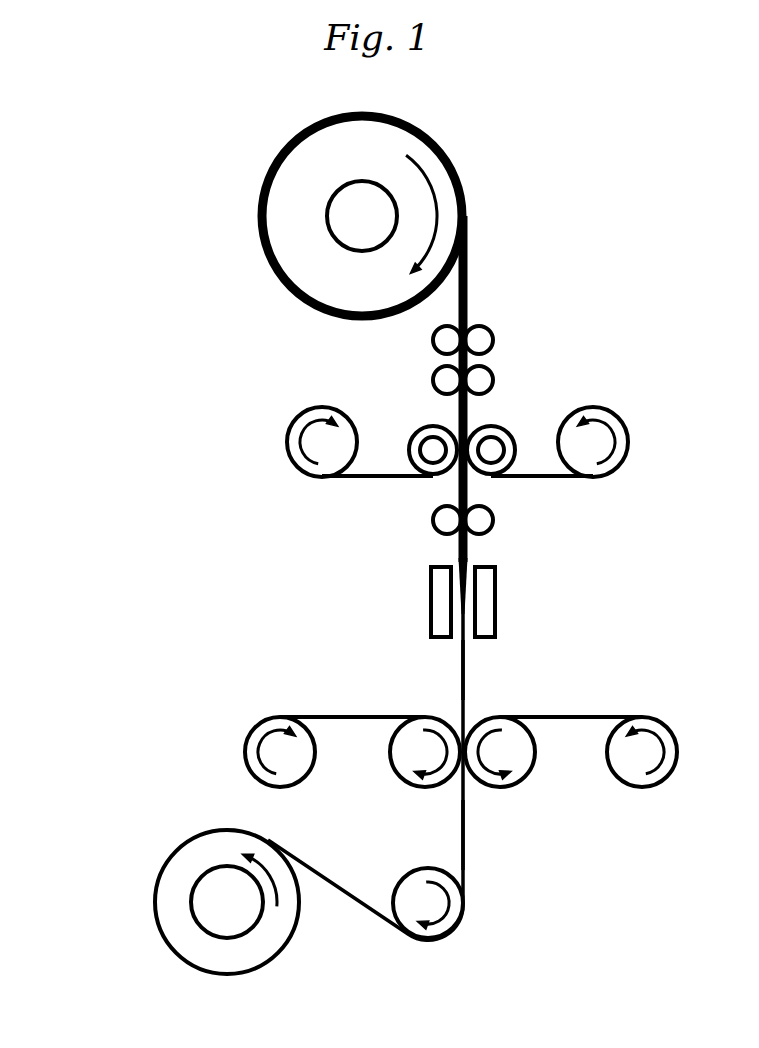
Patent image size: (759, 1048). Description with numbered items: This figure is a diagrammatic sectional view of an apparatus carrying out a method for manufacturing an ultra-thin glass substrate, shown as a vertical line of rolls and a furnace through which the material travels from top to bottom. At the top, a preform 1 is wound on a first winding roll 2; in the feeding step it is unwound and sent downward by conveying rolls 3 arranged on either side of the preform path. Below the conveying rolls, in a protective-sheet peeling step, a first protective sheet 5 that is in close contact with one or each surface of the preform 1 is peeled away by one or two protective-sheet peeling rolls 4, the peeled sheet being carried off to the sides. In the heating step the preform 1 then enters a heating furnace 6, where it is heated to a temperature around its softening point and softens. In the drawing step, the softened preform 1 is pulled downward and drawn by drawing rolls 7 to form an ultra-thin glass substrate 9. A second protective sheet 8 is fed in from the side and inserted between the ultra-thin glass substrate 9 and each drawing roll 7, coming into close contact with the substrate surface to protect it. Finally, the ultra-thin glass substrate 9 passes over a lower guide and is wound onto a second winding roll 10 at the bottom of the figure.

The preform 1 is at (468, 285).
The first winding roll 2 is at (323, 217).
The conveying rolls 3 is at (493, 380).
The protective-sheet peeling rolls 4 is at (510, 430).
The first protective sheet 5 is at (528, 478).
The heating furnace 6 is at (488, 576).
The drawing rolls 7 is at (500, 786).
The second protective sheet 8 is at (583, 718).
The ultra-thin glass substrate 9 is at (457, 692).
The second winding roll 10 is at (192, 898).